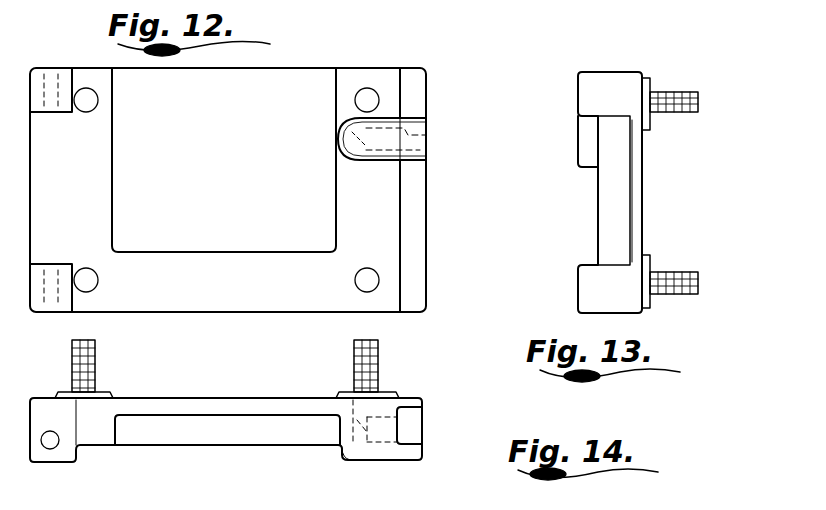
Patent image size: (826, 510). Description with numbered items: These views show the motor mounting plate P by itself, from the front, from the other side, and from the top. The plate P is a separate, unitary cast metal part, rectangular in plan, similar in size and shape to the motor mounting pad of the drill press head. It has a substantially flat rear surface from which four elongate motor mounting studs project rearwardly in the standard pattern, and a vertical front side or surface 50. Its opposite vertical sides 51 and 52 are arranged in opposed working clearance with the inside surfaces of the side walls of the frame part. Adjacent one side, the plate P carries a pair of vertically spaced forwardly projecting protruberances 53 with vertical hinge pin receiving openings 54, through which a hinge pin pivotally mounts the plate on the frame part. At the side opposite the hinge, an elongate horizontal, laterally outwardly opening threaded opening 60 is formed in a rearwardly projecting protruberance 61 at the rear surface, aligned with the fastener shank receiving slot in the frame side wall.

In FIG. 12, the front surface 50 is at (224, 160).
In FIG. 13, the front surface 50 is at (628, 209).
In FIG. 14, the front surface 50 is at (227, 430).
In FIG. 12, the vertical side 51 is at (22, 190).
In FIG. 13, the vertical side 51 is at (630, 181).
In FIG. 14, the vertical side 51 is at (30, 400).
In FIG. 12, the vertical side 52 is at (428, 218).
In FIG. 14, the vertical side 52 is at (424, 422).
In FIG. 12, the protruberances 53 is at (72, 112).
In FIG. 14, the protruberances 53 is at (70, 458).
In FIG. 14, the hinge pin receiving openings 54 is at (48, 446).
In FIG. 12, the threaded opening 60 is at (428, 135).
In FIG. 14, the threaded opening 60 is at (427, 435).
In FIG. 12, the protruberance 61 is at (410, 120).
In FIG. 14, the protruberance 61 is at (382, 462).
In FIG. 13, the motor mounting plate P is at (650, 68).